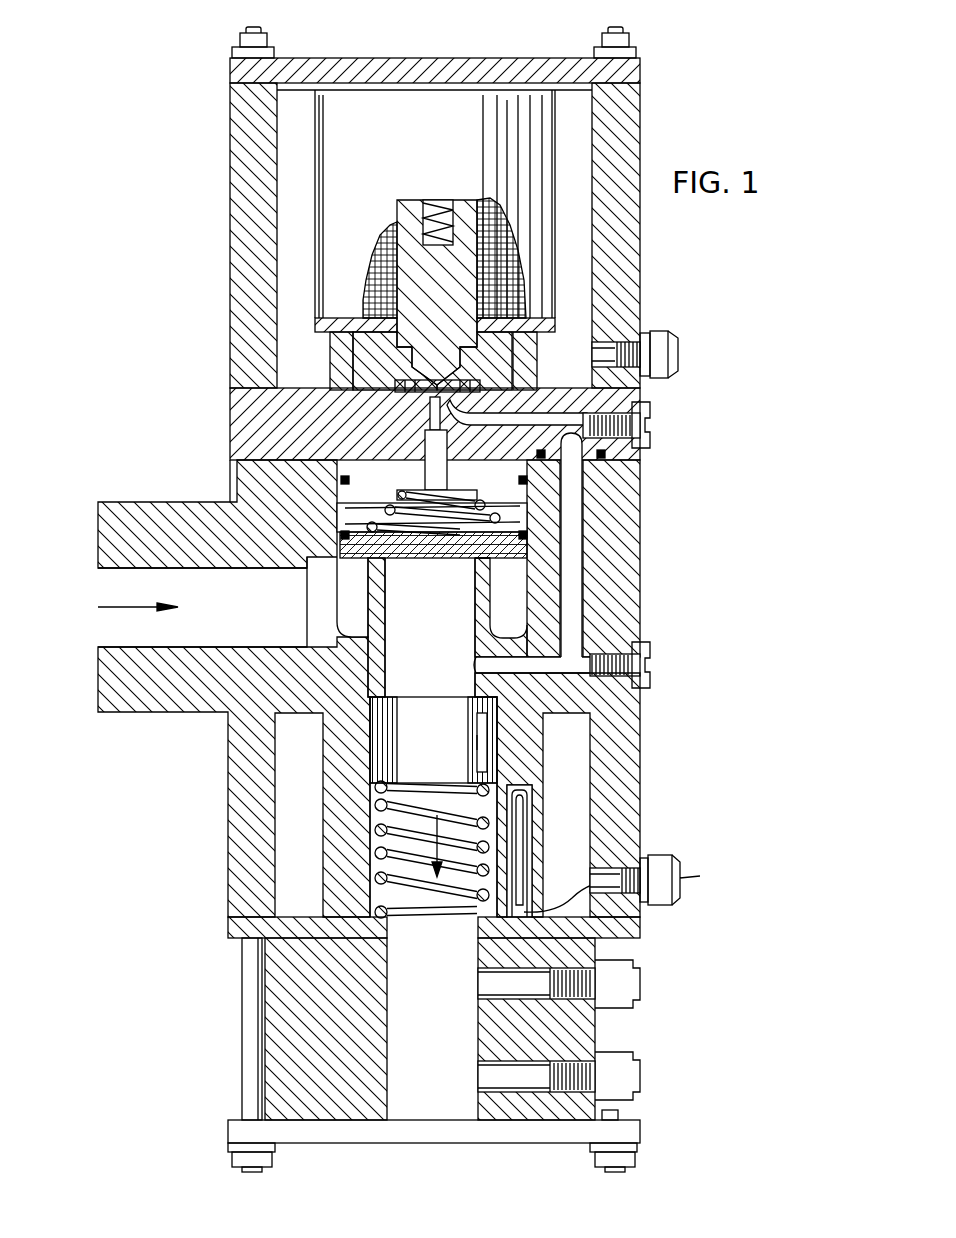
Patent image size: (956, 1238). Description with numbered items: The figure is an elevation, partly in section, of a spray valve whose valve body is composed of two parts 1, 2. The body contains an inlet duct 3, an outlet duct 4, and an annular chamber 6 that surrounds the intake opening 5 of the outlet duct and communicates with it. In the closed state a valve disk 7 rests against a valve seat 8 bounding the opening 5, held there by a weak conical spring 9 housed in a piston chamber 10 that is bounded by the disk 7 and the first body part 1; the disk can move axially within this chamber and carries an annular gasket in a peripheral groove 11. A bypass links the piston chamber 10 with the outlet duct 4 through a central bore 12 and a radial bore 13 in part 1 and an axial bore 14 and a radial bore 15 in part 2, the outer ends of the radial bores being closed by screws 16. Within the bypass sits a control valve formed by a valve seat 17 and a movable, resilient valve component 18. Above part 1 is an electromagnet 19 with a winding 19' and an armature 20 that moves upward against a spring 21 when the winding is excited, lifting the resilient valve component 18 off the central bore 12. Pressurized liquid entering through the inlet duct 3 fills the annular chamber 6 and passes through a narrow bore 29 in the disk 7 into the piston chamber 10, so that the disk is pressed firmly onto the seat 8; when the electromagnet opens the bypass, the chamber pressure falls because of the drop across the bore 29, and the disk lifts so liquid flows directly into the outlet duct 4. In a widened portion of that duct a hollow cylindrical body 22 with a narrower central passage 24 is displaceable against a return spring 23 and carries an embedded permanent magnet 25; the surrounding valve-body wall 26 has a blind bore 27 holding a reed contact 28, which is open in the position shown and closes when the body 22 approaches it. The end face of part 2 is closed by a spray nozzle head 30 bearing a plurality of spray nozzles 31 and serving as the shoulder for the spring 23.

The first part of valve body 1 is at (238, 428).
The second part of valve body 2 is at (240, 478).
The inlet duct 3 is at (210, 619).
The outlet duct 4 is at (445, 659).
The intake opening 5 is at (470, 568).
The annular chamber 6 is at (512, 597).
The valve disk 7 is at (530, 556).
The valve seat 8 is at (388, 565).
The conical spring 9 is at (530, 506).
The piston chamber 10 is at (605, 485).
The groove 11 is at (528, 530).
The central bore 12 is at (427, 447).
The radial bore 13 is at (538, 400).
The axial bore 14 is at (572, 622).
The radial bore 15 is at (585, 667).
The screws 16 is at (652, 414).
The valve seat 17 is at (533, 374).
The resilient valve component 18 is at (553, 320).
The electromagnet 19 is at (435, 44).
The winding 19' is at (435, 204).
The armature 20 is at (467, 243).
The spring 21 is at (440, 210).
The hollow cylindrical body 22 is at (385, 762).
The spring 23 is at (380, 812).
The central passage 24 is at (484, 740).
The permanent magnet 25 is at (465, 745).
The valve-body wall 26 is at (345, 862).
The blind bore 27 is at (512, 800).
The reed contact 28 is at (530, 830).
The bore 29 is at (337, 556).
The spray nozzle head 30 is at (312, 1030).
The spray nozzles 31 is at (626, 1068).